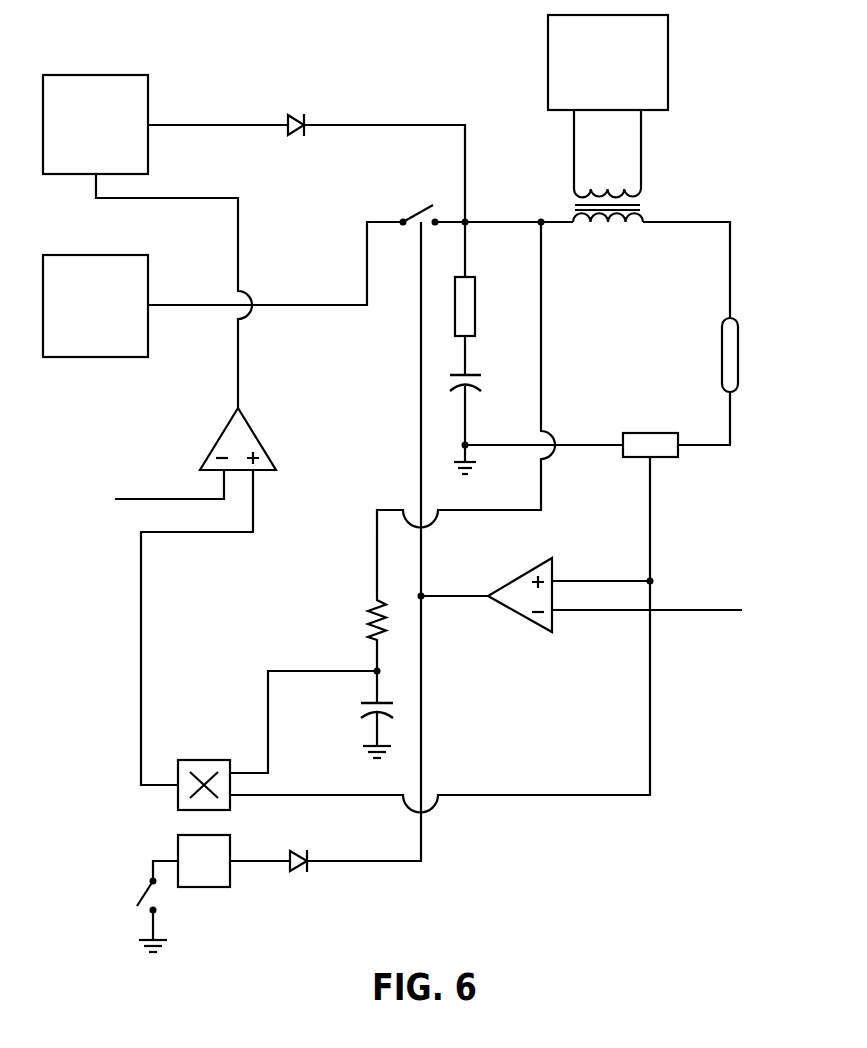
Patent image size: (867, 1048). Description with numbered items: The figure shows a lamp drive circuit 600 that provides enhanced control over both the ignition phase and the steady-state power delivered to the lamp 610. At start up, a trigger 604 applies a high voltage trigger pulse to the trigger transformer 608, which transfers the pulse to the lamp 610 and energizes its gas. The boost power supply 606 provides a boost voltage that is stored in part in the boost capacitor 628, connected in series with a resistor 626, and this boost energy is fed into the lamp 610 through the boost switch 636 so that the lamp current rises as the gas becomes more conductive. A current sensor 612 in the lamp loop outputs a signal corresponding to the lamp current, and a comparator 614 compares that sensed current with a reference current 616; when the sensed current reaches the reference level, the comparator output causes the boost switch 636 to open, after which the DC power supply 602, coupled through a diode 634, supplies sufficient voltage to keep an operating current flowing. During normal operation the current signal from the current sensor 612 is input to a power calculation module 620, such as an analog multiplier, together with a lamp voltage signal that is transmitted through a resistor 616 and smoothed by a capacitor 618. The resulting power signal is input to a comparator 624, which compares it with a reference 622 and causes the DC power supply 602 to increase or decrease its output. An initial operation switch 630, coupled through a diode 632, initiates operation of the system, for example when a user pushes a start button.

The flash lamp drive circuit 600 is at (736, 860).
The DC power supply 602 is at (72, 74).
The trigger 604 is at (629, 90).
The boost power supply 606 is at (72, 255).
The trigger transformer 608 is at (613, 190).
The lamp 610 is at (740, 358).
The current sensor 612 is at (659, 432).
The comparator 614 is at (517, 578).
The reference current 616 is at (369, 617).
The capacitor 618 is at (362, 703).
The power calculation module 620 is at (200, 760).
The reference 622 is at (155, 498).
The comparator 624 is at (253, 428).
The resistor 626 is at (477, 312).
The boost capacitor 628 is at (472, 373).
The initial operation switch 630 is at (184, 875).
The diode 632 is at (308, 855).
The diode 634 is at (295, 114).
The boost switch 636 is at (420, 208).